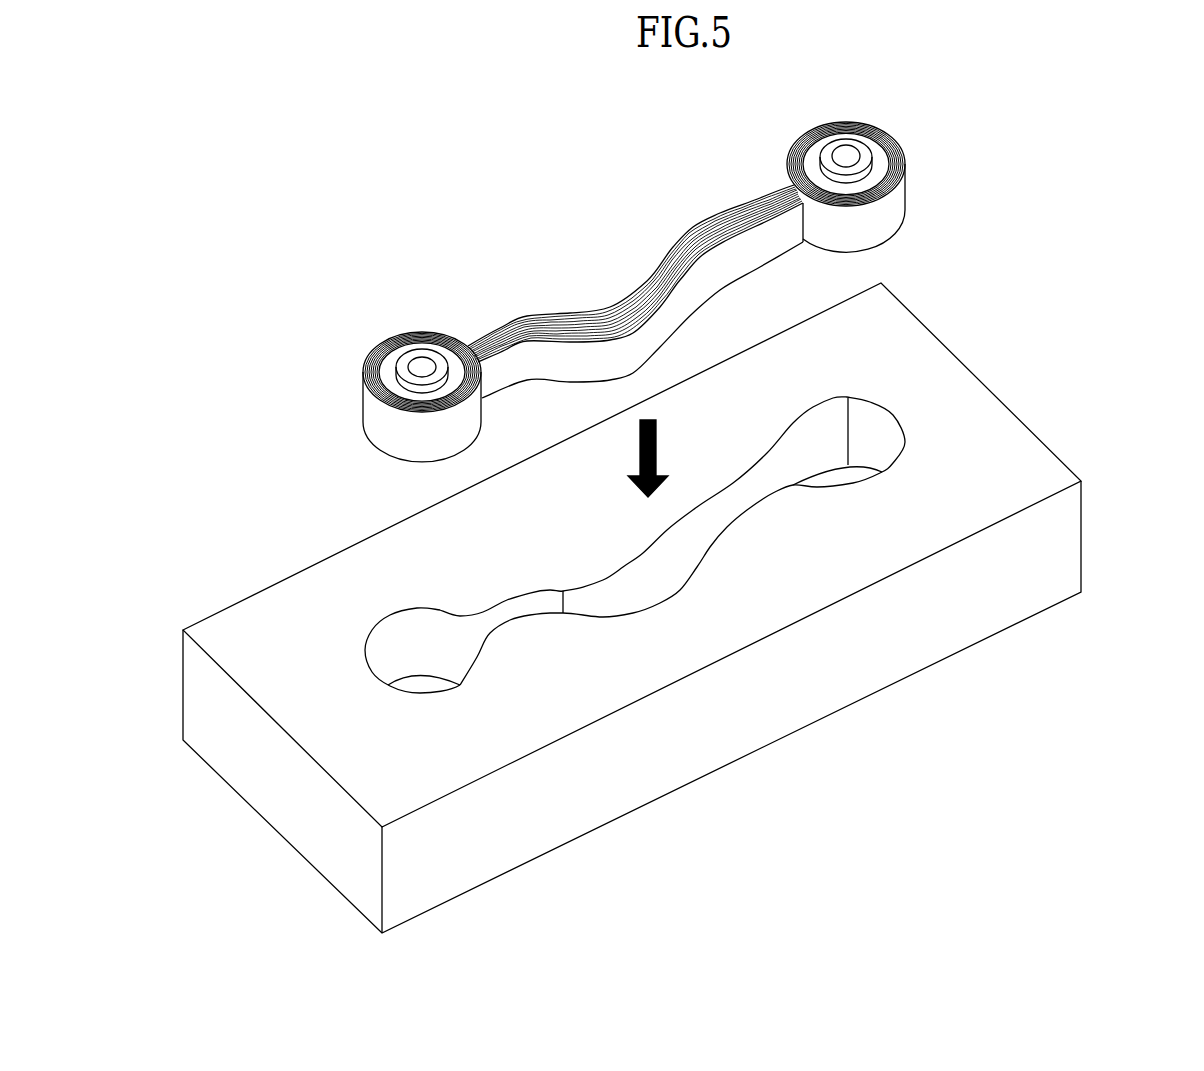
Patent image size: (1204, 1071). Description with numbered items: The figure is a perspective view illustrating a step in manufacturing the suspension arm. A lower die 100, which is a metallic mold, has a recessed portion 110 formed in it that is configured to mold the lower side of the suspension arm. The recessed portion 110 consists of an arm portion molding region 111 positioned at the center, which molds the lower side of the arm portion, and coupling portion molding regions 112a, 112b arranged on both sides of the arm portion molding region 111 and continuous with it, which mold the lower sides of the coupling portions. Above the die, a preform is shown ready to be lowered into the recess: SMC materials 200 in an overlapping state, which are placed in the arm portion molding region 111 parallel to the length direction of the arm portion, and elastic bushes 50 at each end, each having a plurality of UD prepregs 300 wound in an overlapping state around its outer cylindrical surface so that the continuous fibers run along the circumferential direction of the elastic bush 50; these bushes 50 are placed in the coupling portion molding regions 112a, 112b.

The elastic bush 50 is at (392, 367).
The lower die 100 is at (1072, 543).
The recessed portion 110 is at (653, 523).
The arm portion molding region 111 is at (695, 532).
The coupling portion molding region 112a is at (888, 450).
The coupling portion molding region 112b is at (380, 658).
The SMC materials 200 is at (546, 312).
The UD prepregs 300 is at (442, 333).